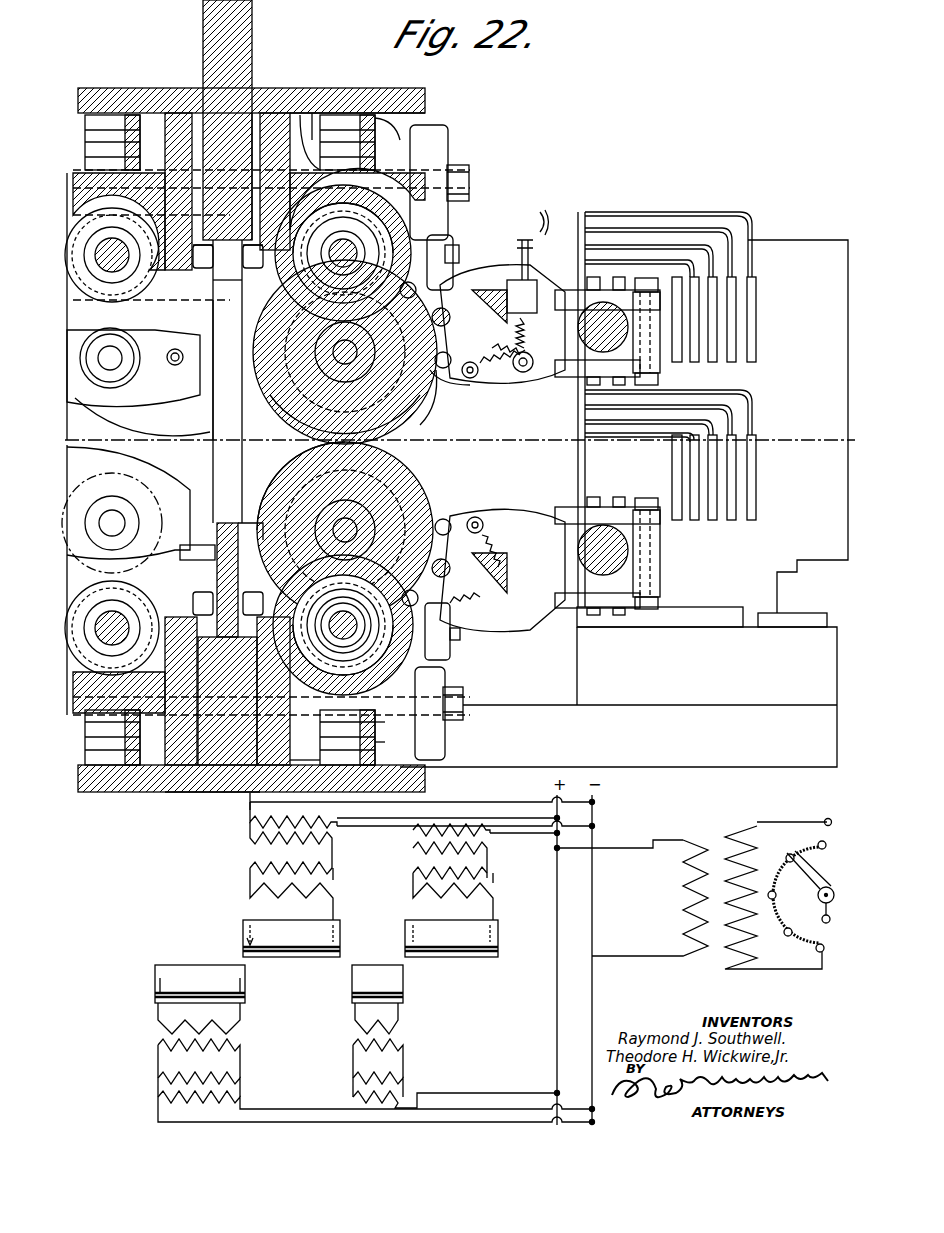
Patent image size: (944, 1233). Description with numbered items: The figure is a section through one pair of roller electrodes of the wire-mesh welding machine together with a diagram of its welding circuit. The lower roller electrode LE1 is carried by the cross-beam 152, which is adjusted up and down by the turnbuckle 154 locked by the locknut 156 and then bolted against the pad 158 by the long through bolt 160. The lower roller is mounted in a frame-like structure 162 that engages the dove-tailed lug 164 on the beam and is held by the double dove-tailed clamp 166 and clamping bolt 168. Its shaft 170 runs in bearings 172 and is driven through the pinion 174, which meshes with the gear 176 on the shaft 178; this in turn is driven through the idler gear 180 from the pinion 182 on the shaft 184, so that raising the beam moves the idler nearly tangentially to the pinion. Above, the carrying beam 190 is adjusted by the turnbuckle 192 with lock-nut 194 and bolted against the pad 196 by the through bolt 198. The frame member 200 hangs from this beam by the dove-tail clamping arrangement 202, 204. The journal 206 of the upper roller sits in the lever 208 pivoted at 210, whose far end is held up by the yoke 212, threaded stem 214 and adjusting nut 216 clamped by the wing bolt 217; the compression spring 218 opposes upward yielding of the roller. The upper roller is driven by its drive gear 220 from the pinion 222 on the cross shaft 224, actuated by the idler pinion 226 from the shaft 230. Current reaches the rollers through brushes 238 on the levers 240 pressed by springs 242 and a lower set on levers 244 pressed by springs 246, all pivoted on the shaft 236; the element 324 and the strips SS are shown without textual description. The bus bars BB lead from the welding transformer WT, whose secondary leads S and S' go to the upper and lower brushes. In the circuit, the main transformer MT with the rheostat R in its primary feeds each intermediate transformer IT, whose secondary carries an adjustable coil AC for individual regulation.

In FIG. 22, the cross-beam 152 is at (440, 690).
In FIG. 22, the turnbuckle 154 is at (391, 740).
In FIG. 22, the locknut 156 is at (391, 719).
In FIG. 22, the pad 158 is at (252, 793).
In FIG. 22, the through bolt 160 is at (445, 730).
In FIG. 22, the frame-like structure 162 is at (252, 532).
In FIG. 22, the dove-tailed lug 164 is at (215, 600).
In FIG. 22, the double dove-tailed clamp 166 is at (452, 632).
In FIG. 22, the clamping bolt 168 is at (462, 640).
In FIG. 22, the shaft 170 is at (402, 490).
In FIG. 22, the bearing 172 is at (291, 486).
In FIG. 22, the pinion 174 is at (339, 625).
In FIG. 22, the gear 176 is at (352, 625).
In FIG. 22, the shaft 178 is at (343, 647).
In FIG. 22, the idler gear 180 is at (343, 625).
In FIG. 22, the pinion 182 is at (303, 755).
In FIG. 22, the shaft 184 is at (215, 792).
In FIG. 22, the carrying beam 190 is at (420, 195).
In FIG. 22, the turnbuckle 192 is at (360, 152).
In FIG. 22, the lock-nut 194 is at (340, 98).
In FIG. 22, the pad 196 is at (255, 115).
In FIG. 22, the through bolt 198 is at (470, 182).
In FIG. 22, the frame member 200 is at (226, 370).
In FIG. 22, the dove-tail clamping arrangement 202 is at (227, 278).
In FIG. 22, the dove-tail clamping arrangement 204 is at (452, 238).
In FIG. 22, the journal 206 is at (345, 415).
In FIG. 22, the lever 208 is at (438, 397).
In FIG. 22, the pivot 210 is at (263, 398).
In FIG. 22, the yoke 212 is at (500, 385).
In FIG. 22, the threaded stem 214 is at (539, 328).
In FIG. 22, the adjusting nut 216 is at (520, 250).
In FIG. 22, the wing bolt 217 is at (530, 217).
In FIG. 22, the compression spring 218 is at (527, 341).
In FIG. 22, the drive gear 220 is at (343, 237).
In FIG. 22, the pinion 222 is at (439, 228).
In FIG. 22, the cross shaft 224 is at (343, 253).
In FIG. 22, the idler pinion 226 is at (340, 253).
In FIG. 22, the shaft 230 is at (228, 255).
In FIG. 22, the shaft 236 is at (468, 308).
In FIG. 22, the upper brush 238 is at (355, 253).
In FIG. 22, the lever 240 is at (462, 384).
In FIG. 22, the spring 242 is at (491, 364).
In FIG. 22, the lever 244 is at (485, 527).
In FIG. 22, the spring 246 is at (508, 555).
In FIG. 22, the lower lever 324 is at (483, 570).
In FIG. 22, the bus bar BB is at (578, 318).
In FIG. 22, the spring strips SS is at (668, 215).
In FIG. 22, the welding transformer WT is at (792, 255).
In FIG. 22, the lower roller electrode LE1 is at (137, 503).
In FIG. 23, the intermediate transformer IT is at (410, 832).
In FIG. 23, the adjustable coil AC is at (258, 838).
In FIG. 23, the secondary lead S is at (280, 957).
In FIG. 23, the secondary lead S' is at (444, 958).
In FIG. 23, the main transformer MT is at (727, 832).
In FIG. 23, the rheostat R is at (806, 890).